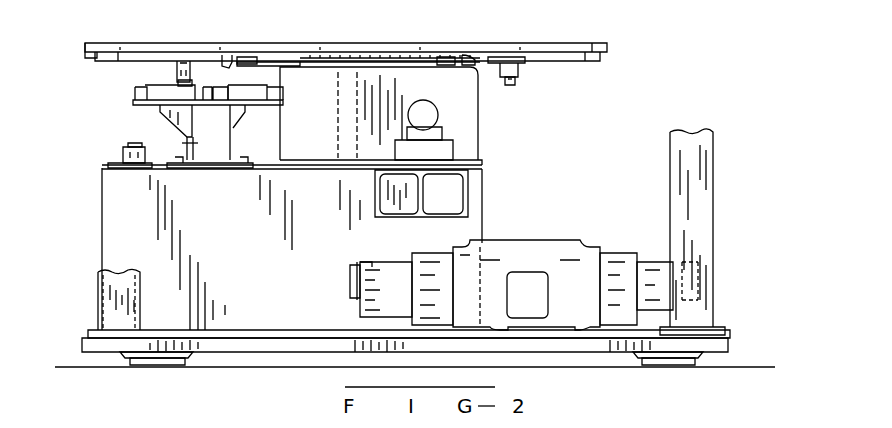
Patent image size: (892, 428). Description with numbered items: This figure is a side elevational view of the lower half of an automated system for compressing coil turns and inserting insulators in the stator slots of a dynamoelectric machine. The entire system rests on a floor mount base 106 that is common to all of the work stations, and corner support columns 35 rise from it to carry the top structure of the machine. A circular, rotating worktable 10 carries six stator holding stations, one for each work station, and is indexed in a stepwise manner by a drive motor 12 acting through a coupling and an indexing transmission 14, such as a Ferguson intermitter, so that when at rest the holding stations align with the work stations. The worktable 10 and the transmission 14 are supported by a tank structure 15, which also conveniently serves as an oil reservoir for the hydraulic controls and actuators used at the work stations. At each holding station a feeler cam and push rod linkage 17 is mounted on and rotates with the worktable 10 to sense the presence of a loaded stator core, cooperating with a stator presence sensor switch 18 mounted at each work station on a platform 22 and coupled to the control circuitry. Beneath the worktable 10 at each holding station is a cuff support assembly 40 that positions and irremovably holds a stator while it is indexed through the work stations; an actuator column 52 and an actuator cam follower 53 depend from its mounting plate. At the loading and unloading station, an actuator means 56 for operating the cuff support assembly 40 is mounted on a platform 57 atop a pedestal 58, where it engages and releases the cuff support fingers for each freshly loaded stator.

The worktable 10 is at (562, 42).
The drive motor 12 is at (563, 242).
The indexing transmission 14 is at (478, 128).
The tank structure 15 is at (483, 217).
The feeler cam and push rod linkage 17 is at (228, 55).
The stator presence sensor switch 18 is at (247, 57).
The platform 22 is at (270, 70).
The corner support columns 35 is at (123, 272).
The cuff support assembly 40 is at (110, 61).
The actuator column 52 is at (187, 63).
The actuator cam follower 53 is at (185, 77).
The actuator means 56 is at (158, 110).
The platform 57 is at (145, 103).
The pedestal 58 is at (183, 143).
The floor mount base 106 is at (82, 343).